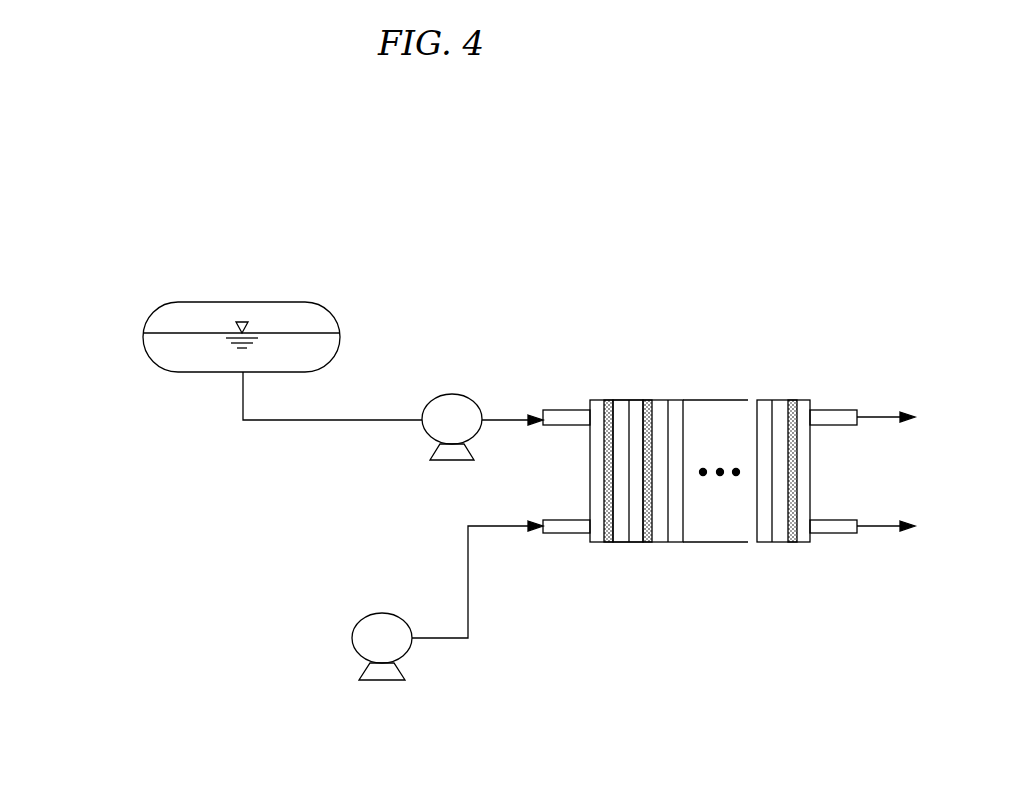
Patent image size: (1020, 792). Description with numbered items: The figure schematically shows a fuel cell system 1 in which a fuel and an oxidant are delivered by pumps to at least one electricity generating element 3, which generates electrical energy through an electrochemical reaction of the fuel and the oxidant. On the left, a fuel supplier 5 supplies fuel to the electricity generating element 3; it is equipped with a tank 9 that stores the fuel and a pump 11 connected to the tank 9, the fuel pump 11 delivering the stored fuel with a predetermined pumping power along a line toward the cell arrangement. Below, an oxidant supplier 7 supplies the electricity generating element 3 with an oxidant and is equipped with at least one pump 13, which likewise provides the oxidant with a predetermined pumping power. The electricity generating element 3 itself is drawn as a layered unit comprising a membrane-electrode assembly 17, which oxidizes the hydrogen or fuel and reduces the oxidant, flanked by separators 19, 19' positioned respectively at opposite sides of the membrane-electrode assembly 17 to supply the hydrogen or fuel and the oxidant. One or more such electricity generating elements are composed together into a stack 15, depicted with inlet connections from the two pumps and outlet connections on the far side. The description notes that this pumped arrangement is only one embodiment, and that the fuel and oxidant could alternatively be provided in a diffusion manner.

The fuel cell system 1 is at (858, 266).
The electricity generating element 3 is at (572, 622).
The fuel supplier 5 is at (112, 336).
The oxidant supplier 7 is at (330, 630).
The tank 9 is at (246, 303).
The pump 11 is at (450, 394).
The pump 13 is at (366, 616).
The stack 15 is at (760, 385).
The membrane-electrode assembly 17 is at (637, 545).
The separator 19 is at (592, 510).
The separator 19' is at (673, 510).